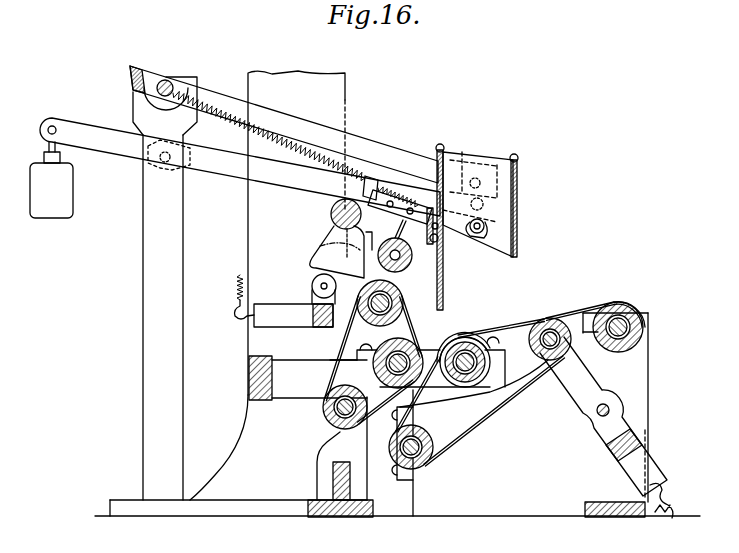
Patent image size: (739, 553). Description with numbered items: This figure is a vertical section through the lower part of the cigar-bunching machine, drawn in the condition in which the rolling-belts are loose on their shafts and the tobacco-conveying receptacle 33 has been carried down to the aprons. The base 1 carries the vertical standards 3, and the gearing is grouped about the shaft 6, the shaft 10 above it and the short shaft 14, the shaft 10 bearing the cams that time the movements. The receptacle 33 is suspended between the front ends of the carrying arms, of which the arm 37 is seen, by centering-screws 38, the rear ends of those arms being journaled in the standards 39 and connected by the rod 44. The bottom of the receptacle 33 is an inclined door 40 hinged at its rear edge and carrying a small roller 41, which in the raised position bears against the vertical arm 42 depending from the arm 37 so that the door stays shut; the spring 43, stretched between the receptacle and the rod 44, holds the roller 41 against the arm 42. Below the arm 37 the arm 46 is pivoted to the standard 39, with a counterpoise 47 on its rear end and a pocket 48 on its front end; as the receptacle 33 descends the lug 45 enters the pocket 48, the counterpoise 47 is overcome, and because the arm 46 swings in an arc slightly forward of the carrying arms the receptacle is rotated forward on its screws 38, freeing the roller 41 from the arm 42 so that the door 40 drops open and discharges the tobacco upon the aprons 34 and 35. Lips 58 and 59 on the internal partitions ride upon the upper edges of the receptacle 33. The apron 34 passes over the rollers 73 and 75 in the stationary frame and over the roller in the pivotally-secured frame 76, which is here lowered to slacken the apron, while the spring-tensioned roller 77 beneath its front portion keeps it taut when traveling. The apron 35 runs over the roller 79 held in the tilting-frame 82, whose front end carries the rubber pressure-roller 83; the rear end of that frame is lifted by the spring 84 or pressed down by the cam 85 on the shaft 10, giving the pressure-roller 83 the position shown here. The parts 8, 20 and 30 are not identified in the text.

The base 1 is at (397, 423).
The vertical standards 3 is at (267, 285).
The shaft 6 is at (414, 344).
The roller 8 is at (385, 364).
The shaft 10 is at (338, 214).
The short shaft 14 is at (442, 365).
The roller 20 is at (378, 304).
The roller 30 is at (345, 399).
The receptacle 33 is at (488, 204).
The rolling-apron 34 is at (534, 384).
The rolling-apron 35 is at (373, 360).
The arm 37 is at (284, 124).
The centering-screws 38 is at (477, 170).
The standards 39 is at (165, 288).
The door 40 is at (448, 230).
The roller 41 is at (433, 246).
The vertical arm 42 is at (414, 222).
The spring 43 is at (295, 148).
The rod 44 is at (170, 76).
The lug 45 is at (484, 206).
The arm 46 is at (240, 167).
The counterpoise 47 is at (51, 180).
The pocket or recess 48 is at (485, 230).
The lip 58 is at (517, 200).
The lip 59 is at (437, 140).
The roller 73 is at (630, 306).
The roller 75 is at (415, 443).
The pivotally-secured frame 76 is at (308, 378).
The roller 77 is at (550, 346).
The roller 79 is at (603, 416).
The tilting-frame 82 is at (295, 300).
The rubber pressure-roller 83 is at (405, 262).
The spring 84 is at (233, 292).
The cam 85 is at (341, 252).